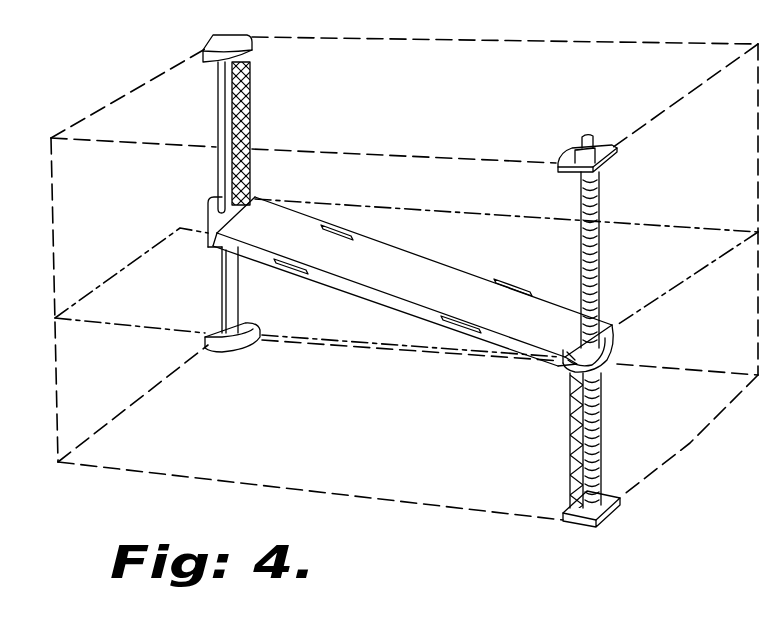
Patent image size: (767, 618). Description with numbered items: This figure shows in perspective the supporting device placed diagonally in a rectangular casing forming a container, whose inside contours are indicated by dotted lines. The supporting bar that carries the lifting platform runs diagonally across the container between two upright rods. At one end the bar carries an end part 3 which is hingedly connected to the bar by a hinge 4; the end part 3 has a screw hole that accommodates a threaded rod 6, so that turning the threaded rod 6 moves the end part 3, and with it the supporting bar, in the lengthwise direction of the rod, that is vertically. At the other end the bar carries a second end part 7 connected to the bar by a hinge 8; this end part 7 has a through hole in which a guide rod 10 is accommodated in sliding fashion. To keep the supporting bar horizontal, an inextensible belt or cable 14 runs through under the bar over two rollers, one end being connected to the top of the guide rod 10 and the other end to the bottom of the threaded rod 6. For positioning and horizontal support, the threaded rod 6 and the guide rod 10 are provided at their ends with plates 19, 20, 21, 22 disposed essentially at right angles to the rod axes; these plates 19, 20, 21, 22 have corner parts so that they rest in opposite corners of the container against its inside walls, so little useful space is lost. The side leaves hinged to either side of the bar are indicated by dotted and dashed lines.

The plate 21 is at (230, 42).
The guide rod 10 is at (225, 107).
The inextensible belt or cable 14 is at (250, 123).
The second end part 7 is at (218, 215).
The hinge 8 is at (220, 249).
The plate 22 is at (221, 352).
The plate 19 is at (607, 155).
The threaded rod 6 is at (600, 258).
The end part 3 is at (617, 346).
The hinge 4 is at (572, 355).
The plate 20 is at (582, 523).